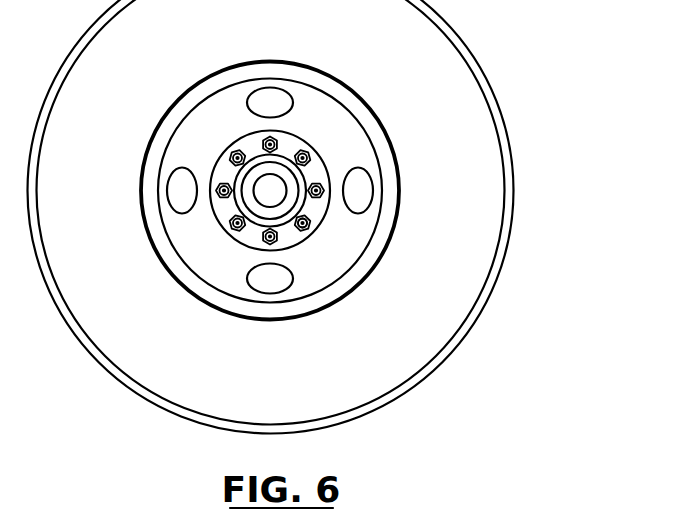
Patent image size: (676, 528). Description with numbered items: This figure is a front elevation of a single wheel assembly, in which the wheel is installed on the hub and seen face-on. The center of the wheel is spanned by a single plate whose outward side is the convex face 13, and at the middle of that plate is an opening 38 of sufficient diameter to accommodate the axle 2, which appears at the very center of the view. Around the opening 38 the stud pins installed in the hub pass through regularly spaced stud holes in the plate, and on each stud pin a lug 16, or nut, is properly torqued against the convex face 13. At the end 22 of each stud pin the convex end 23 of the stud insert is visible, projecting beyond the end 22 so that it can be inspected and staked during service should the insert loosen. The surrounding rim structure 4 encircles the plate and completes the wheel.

The axle 2 is at (280, 187).
The wheel rim 4 is at (500, 122).
The convex face 13 is at (348, 230).
The lug 16 is at (303, 223).
The end of the stud pin 22 is at (303, 223).
The convex end of the stud insert 23 is at (303, 223).
The opening 38 is at (287, 228).